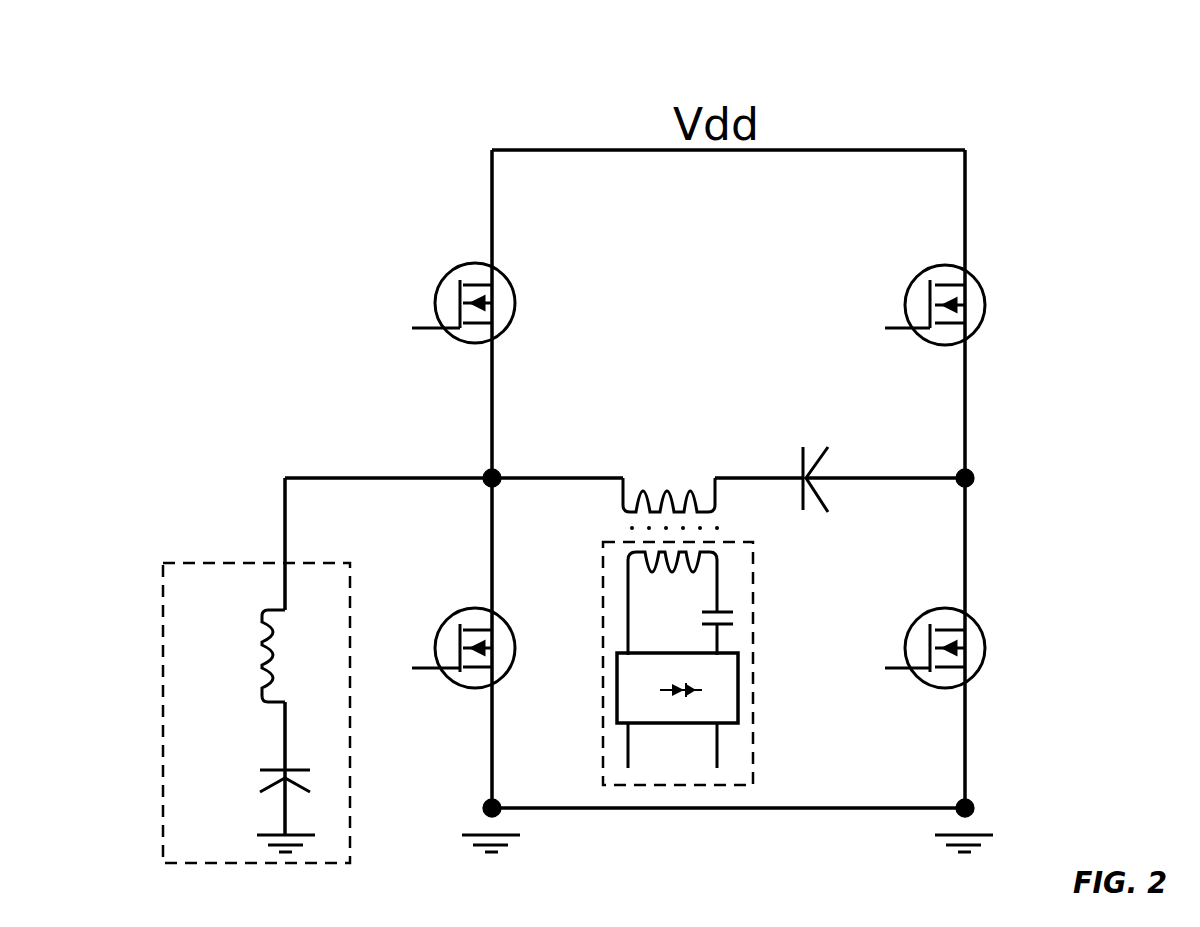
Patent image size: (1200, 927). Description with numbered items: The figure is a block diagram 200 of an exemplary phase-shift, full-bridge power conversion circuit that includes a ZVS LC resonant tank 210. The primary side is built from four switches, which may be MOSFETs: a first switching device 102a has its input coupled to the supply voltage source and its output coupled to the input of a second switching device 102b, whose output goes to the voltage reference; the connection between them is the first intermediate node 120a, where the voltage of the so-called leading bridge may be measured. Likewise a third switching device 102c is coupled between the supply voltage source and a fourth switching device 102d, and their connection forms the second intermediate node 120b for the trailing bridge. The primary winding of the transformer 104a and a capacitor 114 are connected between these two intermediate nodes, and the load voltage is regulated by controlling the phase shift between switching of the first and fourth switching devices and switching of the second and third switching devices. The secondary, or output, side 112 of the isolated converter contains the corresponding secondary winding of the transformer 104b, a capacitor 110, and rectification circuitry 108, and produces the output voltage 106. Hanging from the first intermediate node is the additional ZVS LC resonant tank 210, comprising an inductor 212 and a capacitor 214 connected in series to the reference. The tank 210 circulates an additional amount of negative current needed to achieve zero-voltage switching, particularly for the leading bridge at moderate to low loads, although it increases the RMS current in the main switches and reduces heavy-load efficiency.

The block diagram 200 is at (83, 70).
The first switching device Q1 102a is at (470, 258).
The second switching device Q2 102b is at (440, 678).
The third switching device Q3 102c is at (988, 258).
The fourth switching device Q4 102d is at (983, 675).
The first intermediate node PH 120a is at (485, 455).
The second intermediate node PH1 120b is at (975, 465).
The primary winding of transformer 104a is at (687, 477).
The secondary winding of transformer 104b is at (678, 583).
The capacitor 114 is at (805, 440).
The capacitor 110 is at (735, 615).
The rectification circuitry 108 is at (742, 675).
The secondary side 112 is at (752, 703).
The output voltage Vout 106 is at (665, 780).
The ZVS LC resonant tank 210 is at (163, 728).
The inductor Lz 212 is at (262, 620).
The capacitor Cz 214 is at (277, 760).